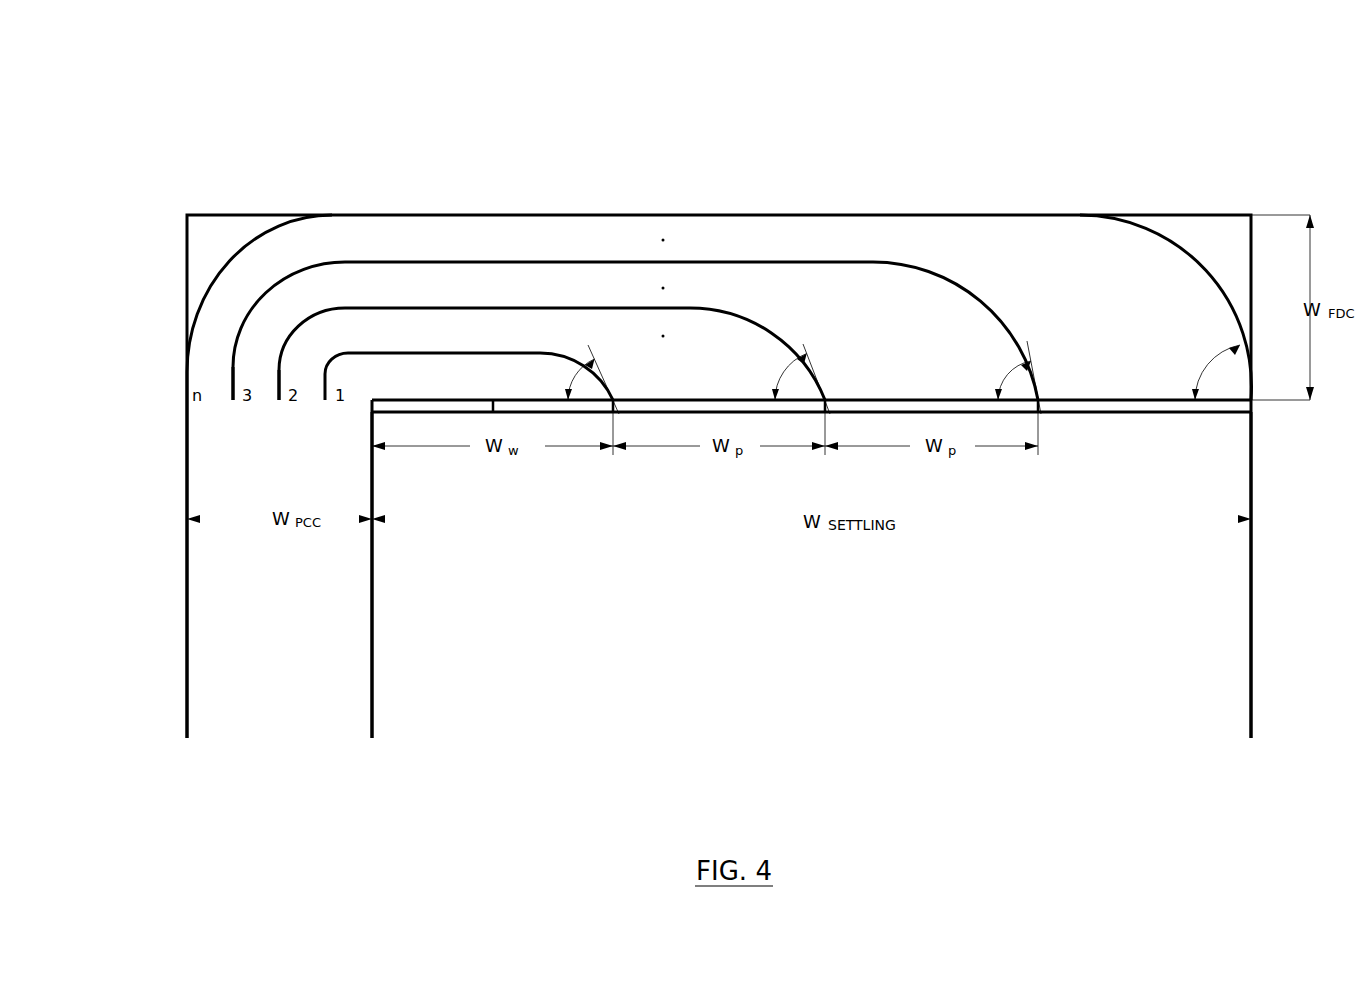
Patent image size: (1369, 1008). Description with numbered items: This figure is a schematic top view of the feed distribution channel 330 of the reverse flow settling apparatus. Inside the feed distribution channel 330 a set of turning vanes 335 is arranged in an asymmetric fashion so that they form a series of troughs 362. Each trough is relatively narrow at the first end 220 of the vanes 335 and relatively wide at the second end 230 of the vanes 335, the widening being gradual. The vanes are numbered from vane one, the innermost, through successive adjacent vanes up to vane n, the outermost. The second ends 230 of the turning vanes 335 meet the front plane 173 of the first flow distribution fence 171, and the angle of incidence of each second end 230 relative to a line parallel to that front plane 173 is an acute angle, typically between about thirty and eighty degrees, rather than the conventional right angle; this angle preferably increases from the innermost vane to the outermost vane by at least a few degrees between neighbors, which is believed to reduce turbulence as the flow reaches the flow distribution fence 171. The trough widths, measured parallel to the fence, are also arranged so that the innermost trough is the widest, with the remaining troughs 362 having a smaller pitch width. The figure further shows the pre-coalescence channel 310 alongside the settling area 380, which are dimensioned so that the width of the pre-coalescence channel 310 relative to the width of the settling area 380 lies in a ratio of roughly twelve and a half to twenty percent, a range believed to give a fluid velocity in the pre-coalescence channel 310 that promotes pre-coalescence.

The feed distribution channel 330 is at (1058, 213).
The pre-coalescence channel 310 is at (212, 603).
The settling area 380 is at (1087, 559).
The turning vanes 335 is at (395, 303).
The troughs 362 is at (663, 336).
The first end 220 is at (279, 400).
The second end 230 is at (827, 398).
The front plane 173 is at (1253, 414).
The first flow distribution fence 171 is at (1165, 407).